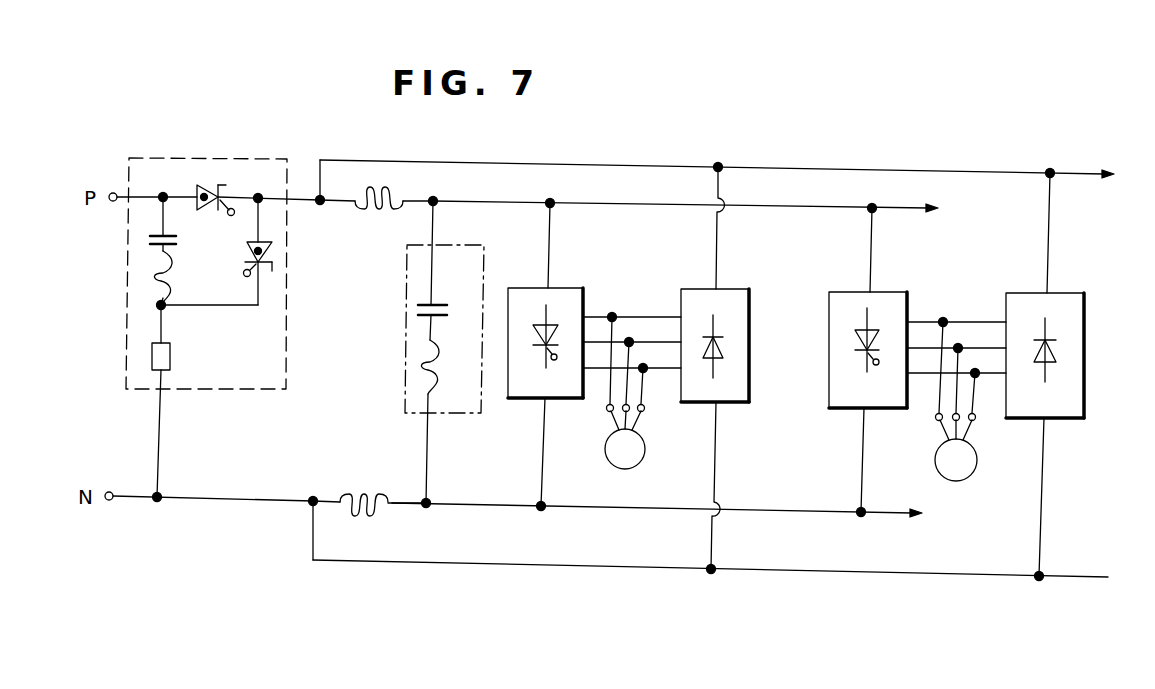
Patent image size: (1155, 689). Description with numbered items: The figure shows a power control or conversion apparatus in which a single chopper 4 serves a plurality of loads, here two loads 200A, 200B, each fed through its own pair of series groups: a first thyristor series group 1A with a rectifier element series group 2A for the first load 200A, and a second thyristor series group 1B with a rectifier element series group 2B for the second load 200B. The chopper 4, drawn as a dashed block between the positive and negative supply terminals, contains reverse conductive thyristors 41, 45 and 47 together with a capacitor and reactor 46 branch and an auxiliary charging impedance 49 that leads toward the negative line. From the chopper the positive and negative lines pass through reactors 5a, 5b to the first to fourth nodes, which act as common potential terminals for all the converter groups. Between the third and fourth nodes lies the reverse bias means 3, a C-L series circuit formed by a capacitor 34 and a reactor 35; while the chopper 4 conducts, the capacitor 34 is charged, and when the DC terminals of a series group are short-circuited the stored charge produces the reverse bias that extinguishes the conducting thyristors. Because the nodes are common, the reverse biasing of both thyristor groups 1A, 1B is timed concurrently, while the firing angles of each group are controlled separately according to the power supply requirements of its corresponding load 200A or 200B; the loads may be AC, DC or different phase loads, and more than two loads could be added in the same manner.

The chopper 4 is at (208, 157).
The reverse conductive thyristor 41 is at (197, 195).
The reverse conductive thyristor 45 is at (172, 246).
The reactor 46 is at (172, 276).
The reverse conductive thyristor 47 is at (272, 255).
The auxiliary charging impedance 49 is at (171, 359).
The reactor 5a is at (394, 188).
The reactor 5b is at (383, 514).
The reverse bias means 3 is at (405, 349).
The capacitor 34 is at (440, 310).
The reactor 35 is at (436, 356).
The first thyristor series group 1A is at (599, 274).
The first rectifier element series group 2A is at (772, 275).
The second thyristor series group 1B is at (945, 278).
The second rectifier element series group 2B is at (1108, 279).
The load 200A is at (711, 478).
The load 200B is at (1020, 511).